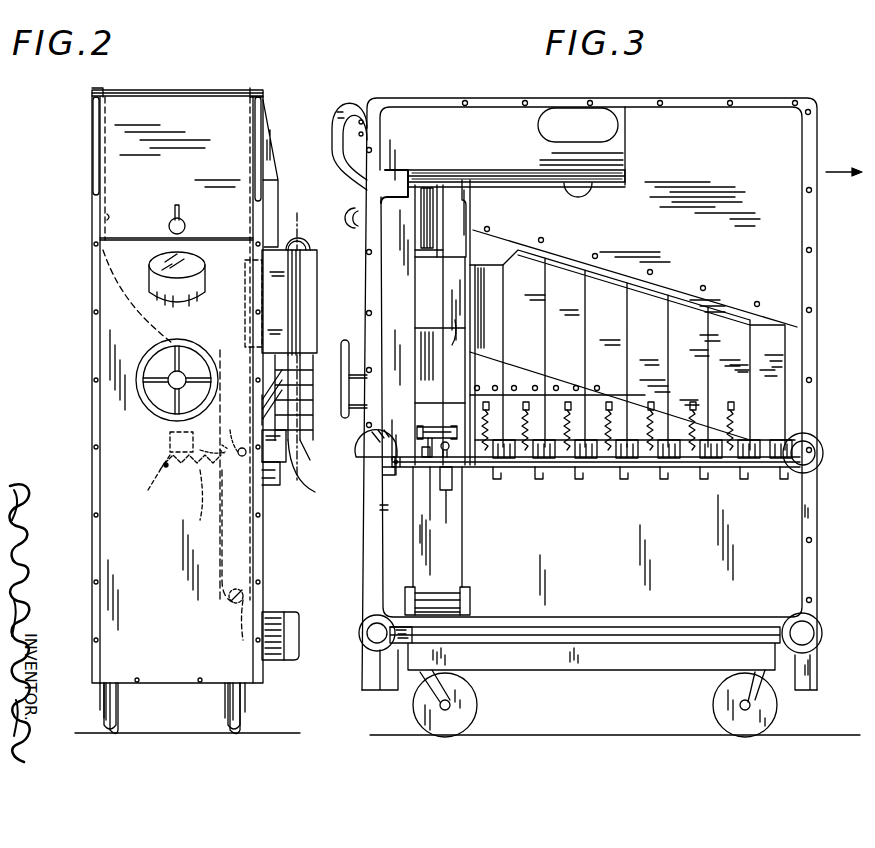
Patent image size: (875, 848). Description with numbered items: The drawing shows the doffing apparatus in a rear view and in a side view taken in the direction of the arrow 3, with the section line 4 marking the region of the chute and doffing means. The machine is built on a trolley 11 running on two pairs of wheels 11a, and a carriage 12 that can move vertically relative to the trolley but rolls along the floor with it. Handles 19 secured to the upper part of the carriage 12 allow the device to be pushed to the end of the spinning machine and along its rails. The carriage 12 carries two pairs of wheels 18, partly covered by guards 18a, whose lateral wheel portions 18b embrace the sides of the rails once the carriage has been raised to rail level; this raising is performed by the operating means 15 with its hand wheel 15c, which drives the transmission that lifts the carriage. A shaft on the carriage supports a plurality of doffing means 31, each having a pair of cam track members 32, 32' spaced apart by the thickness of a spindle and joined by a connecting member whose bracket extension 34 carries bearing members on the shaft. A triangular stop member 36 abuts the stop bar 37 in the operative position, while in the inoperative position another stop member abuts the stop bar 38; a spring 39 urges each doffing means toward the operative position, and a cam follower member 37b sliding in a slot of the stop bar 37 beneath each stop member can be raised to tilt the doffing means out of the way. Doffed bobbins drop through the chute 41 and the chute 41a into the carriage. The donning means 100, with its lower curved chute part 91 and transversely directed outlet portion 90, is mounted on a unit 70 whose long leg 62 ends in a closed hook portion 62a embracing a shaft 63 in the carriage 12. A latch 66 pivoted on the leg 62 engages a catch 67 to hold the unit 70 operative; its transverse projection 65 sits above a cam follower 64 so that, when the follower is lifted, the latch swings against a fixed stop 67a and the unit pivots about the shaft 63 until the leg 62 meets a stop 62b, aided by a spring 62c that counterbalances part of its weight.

In FIG. 2, the arrow 3 is at (285, 545).
In FIG. 2, the section line 4 is at (316, 476).
In FIG. 3, the trolley 11 is at (595, 670).
In FIG. 2, the wheels 11a is at (240, 728).
In FIG. 3, the wheels 11a is at (466, 713).
In FIG. 2, the carriage 12 is at (100, 502).
In FIG. 3, the carriage 12 is at (393, 569).
In FIG. 3, the operating means 15 is at (352, 330).
In FIG. 2, the hand wheel 15c is at (171, 352).
In FIG. 2, the wheels 18 is at (301, 636).
In FIG. 3, the wheels 18 is at (372, 476).
In FIG. 3, the guards 18a is at (366, 435).
In FIG. 2, the lateral wheel portions 18b is at (293, 634).
In FIG. 2, the handles 19 is at (96, 122).
In FIG. 3, the handles 19 is at (340, 128).
In FIG. 2, the doffing means 31 is at (311, 250).
In FIG. 3, the doffing means 31 is at (665, 288).
In FIG. 2, the cam track member 32 is at (318, 453).
In FIG. 2, the cam track member 32' is at (317, 477).
In FIG. 2, the bracket extension 34 is at (268, 402).
In FIG. 3, the bracket extension 34 is at (476, 402).
In FIG. 3, the triangular stop member 36 is at (616, 470).
In FIG. 3, the stop bar 37 is at (650, 470).
In FIG. 3, the cam follower member 37b is at (580, 467).
In FIG. 3, the stop bar 38 is at (545, 402).
In FIG. 3, the spring 39 is at (483, 412).
In FIG. 2, the chute 41 is at (316, 286).
In FIG. 3, the chute 41 is at (627, 355).
In FIG. 2, the chute 41a is at (245, 270).
In FIG. 2, the long leg 62 is at (222, 494).
In FIG. 3, the long leg 62 is at (466, 540).
In FIG. 2, the closed hook portion 62a is at (250, 605).
In FIG. 3, the closed hook portion 62a is at (452, 610).
In FIG. 2, the stop 62b is at (146, 478).
In FIG. 2, the spring 62c is at (182, 490).
In FIG. 2, the shaft 63 is at (255, 588).
In FIG. 3, the shaft 63 is at (452, 593).
In FIG. 2, the cam follower 64 is at (285, 485).
In FIG. 3, the cam follower 64 is at (438, 521).
In FIG. 3, the transverse projection 65 is at (437, 495).
In FIG. 2, the latch 66 is at (250, 440).
In FIG. 3, the latch 66 is at (423, 467).
In FIG. 2, the catch 67 is at (262, 460).
In FIG. 3, the catch 67 is at (440, 467).
In FIG. 2, the fixed stop 67a is at (228, 445).
In FIG. 3, the fixed stop 67a is at (420, 430).
In FIG. 2, the unit 70 is at (222, 352).
In FIG. 3, the unit 70 is at (452, 246).
In FIG. 2, the chute outlet portion 90 is at (297, 318).
In FIG. 3, the chute outlet portion 90 is at (430, 350).
In FIG. 2, the lower curved chute part 91 is at (105, 218).
In FIG. 3, the lower curved chute part 91 is at (430, 201).
In FIG. 3, the donning means 100 is at (458, 340).